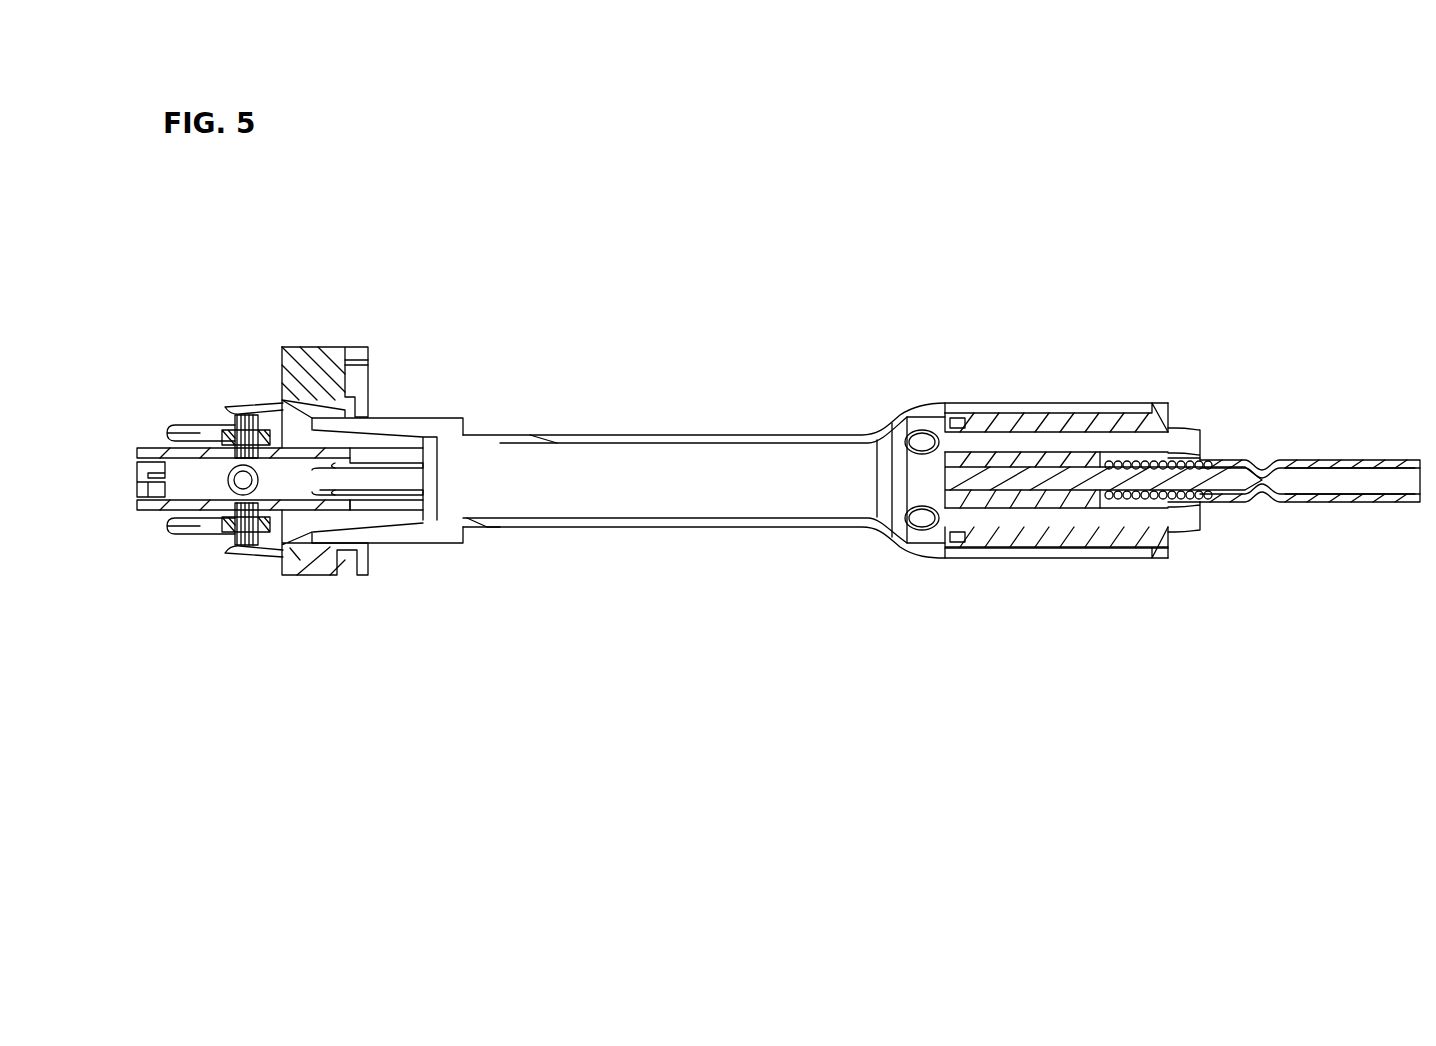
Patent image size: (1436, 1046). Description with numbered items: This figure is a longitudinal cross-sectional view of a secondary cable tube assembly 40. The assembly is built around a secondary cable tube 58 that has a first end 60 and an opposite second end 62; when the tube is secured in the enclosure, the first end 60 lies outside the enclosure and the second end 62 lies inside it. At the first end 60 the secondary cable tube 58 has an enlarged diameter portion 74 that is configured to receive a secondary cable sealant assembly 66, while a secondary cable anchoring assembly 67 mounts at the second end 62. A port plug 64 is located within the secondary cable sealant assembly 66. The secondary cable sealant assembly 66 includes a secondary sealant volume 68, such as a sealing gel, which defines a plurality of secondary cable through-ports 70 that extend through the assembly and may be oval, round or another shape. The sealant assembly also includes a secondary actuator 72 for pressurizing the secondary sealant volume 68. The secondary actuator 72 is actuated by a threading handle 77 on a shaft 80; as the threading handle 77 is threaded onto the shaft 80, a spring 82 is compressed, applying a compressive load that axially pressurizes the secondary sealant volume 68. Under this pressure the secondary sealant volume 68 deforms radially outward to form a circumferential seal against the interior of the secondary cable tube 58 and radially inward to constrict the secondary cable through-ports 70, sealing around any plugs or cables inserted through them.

The secondary cable tube assembly 40 is at (815, 338).
The secondary cable tube 58 is at (683, 433).
The first end 60 is at (1152, 556).
The second end 62 is at (303, 553).
The port plug 64 is at (1208, 423).
The secondary cable sealant assembly 66 is at (1168, 396).
The secondary cable anchoring assembly 67 is at (248, 563).
The secondary sealant volume 68 is at (1012, 540).
The secondary cable through-ports 70 is at (1013, 440).
The secondary actuator 72 is at (1346, 506).
The enlarged diameter portion 74 is at (950, 402).
The threading handle 77 is at (1341, 460).
The shaft 80 is at (1075, 480).
The spring 82 is at (1195, 497).